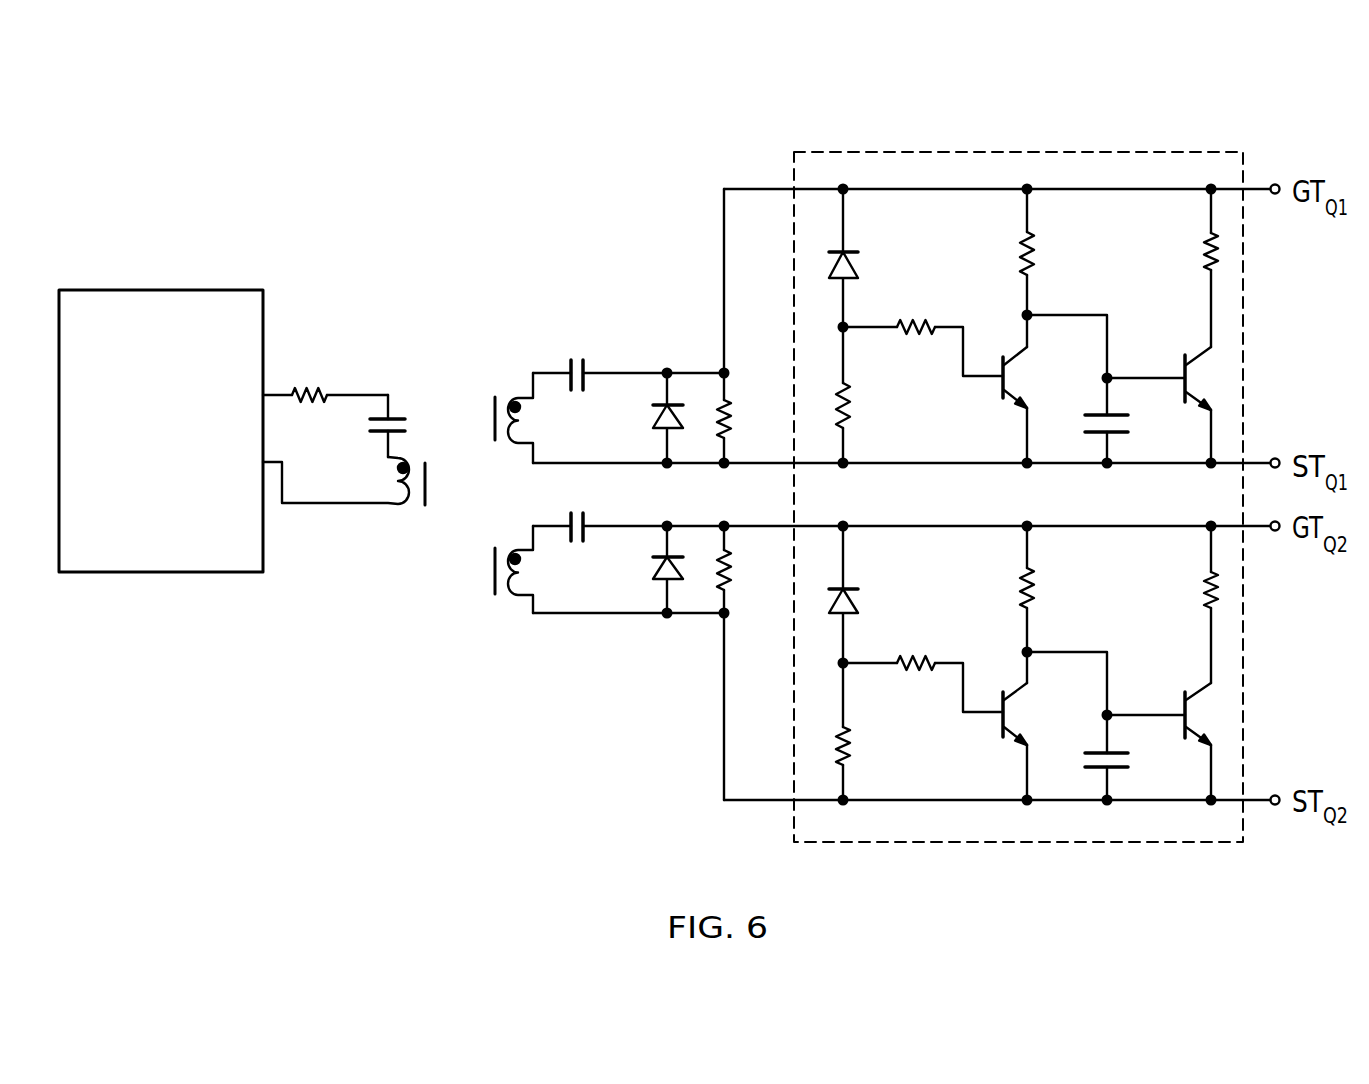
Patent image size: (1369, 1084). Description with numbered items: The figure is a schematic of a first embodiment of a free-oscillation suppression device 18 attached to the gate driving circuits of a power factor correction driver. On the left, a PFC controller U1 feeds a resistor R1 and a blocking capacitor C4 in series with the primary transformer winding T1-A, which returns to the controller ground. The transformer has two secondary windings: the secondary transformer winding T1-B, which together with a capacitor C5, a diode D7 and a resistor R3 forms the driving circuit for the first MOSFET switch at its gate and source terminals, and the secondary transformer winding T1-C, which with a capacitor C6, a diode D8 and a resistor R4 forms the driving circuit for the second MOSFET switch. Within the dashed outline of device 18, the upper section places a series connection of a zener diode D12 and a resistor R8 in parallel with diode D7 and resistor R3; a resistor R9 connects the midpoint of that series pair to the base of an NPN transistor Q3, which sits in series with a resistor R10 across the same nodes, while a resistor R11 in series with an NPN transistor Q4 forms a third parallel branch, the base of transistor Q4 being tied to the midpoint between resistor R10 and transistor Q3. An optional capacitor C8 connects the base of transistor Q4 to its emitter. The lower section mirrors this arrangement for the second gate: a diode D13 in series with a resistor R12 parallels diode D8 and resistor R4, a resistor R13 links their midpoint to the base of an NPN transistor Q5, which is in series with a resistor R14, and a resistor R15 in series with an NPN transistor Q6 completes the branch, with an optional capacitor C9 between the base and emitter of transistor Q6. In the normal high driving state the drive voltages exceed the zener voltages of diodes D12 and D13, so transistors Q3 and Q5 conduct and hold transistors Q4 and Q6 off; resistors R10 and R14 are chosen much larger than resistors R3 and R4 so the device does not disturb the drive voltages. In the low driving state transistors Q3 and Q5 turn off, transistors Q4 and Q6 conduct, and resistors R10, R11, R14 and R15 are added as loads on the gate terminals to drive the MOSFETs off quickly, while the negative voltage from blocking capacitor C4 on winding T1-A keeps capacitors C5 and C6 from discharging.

The free-oscillation suppression device 18 is at (990, 152).
The PFC controller U1 is at (173, 450).
The resistor R1 is at (325, 377).
The blocking capacitor C4 is at (371, 426).
The primary transformer winding T1-A is at (374, 481).
The secondary transformer winding T1-B is at (485, 418).
The secondary transformer winding T1-C is at (485, 569).
The capacitor C5 is at (628, 357).
The capacitor C6 is at (628, 509).
The diode D7 is at (651, 418).
The diode D8 is at (651, 569).
The resistor R3 is at (743, 418).
The resistor R4 is at (743, 569).
The zener diode D12 is at (868, 258).
The diode D13 is at (868, 594).
The resistor R8 is at (863, 395).
The resistor R9 is at (923, 348).
The resistor R10 is at (1003, 268).
The resistor R11 is at (1186, 268).
The resistor R12 is at (868, 731).
The resistor R13 is at (923, 684).
The resistor R14 is at (1003, 604).
The resistor R15 is at (1185, 604).
The NPN transistor Q3 is at (997, 405).
The NPN transistor Q4 is at (1179, 402).
The NPN transistor Q5 is at (997, 741).
The NPN transistor Q6 is at (1179, 738).
The capacitor C8 is at (1092, 420).
The capacitor C9 is at (1091, 757).